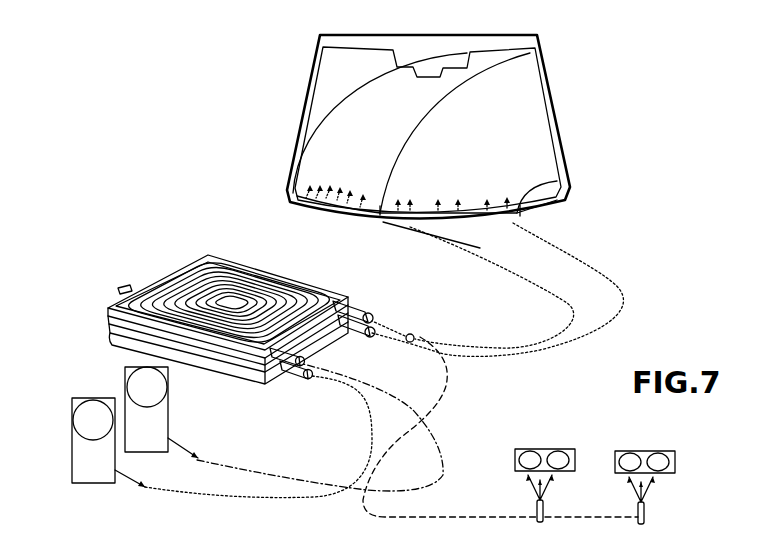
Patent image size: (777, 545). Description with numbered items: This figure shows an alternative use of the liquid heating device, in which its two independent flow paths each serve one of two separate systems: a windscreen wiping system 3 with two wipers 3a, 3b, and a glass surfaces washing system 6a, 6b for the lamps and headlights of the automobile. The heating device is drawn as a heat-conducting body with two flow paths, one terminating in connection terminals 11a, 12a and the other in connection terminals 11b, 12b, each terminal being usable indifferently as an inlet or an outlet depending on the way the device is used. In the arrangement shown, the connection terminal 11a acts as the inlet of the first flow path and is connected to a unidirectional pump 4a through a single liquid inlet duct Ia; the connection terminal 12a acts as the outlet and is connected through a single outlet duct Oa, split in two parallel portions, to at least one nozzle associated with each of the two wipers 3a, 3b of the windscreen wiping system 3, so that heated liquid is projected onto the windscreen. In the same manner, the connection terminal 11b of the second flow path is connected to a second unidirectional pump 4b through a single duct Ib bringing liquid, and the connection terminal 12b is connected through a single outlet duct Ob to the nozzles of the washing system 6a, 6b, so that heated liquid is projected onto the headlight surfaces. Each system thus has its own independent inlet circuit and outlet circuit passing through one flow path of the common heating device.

The windscreen wiping system 3 is at (325, 85).
The wiper 3a is at (327, 205).
The wiper 3b is at (515, 218).
The unidirectional pump 4a is at (128, 377).
The unidirectional pump 4b is at (83, 460).
The glass surfaces washing system 6a is at (543, 450).
The glass surfaces washing system 6b is at (670, 468).
The connection terminal 11a is at (287, 357).
The connection terminal 11b is at (300, 383).
The connection terminal 12a is at (355, 310).
The connection terminal 12b is at (352, 328).
The outlet duct Oa is at (397, 332).
The outlet duct Ob is at (447, 382).
The liquid inlet duct Ia is at (242, 470).
The duct Ib is at (197, 493).